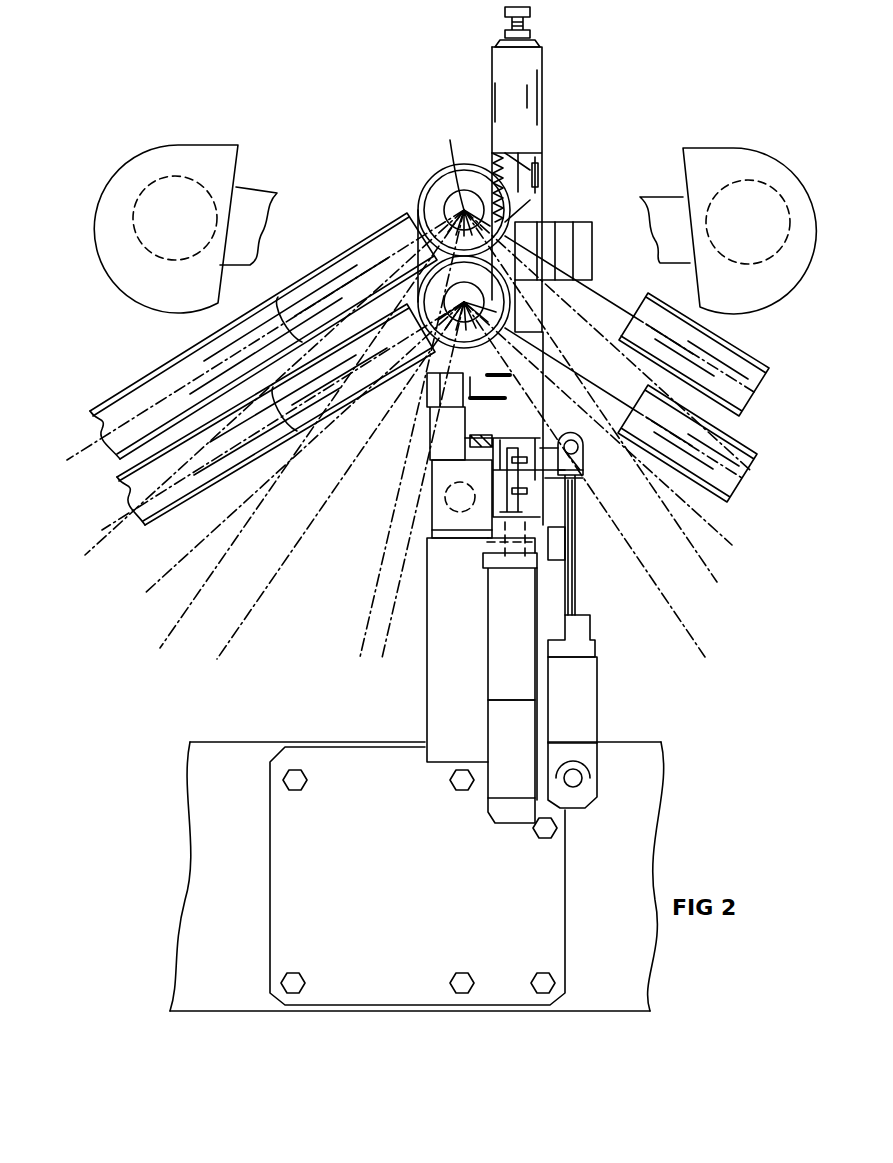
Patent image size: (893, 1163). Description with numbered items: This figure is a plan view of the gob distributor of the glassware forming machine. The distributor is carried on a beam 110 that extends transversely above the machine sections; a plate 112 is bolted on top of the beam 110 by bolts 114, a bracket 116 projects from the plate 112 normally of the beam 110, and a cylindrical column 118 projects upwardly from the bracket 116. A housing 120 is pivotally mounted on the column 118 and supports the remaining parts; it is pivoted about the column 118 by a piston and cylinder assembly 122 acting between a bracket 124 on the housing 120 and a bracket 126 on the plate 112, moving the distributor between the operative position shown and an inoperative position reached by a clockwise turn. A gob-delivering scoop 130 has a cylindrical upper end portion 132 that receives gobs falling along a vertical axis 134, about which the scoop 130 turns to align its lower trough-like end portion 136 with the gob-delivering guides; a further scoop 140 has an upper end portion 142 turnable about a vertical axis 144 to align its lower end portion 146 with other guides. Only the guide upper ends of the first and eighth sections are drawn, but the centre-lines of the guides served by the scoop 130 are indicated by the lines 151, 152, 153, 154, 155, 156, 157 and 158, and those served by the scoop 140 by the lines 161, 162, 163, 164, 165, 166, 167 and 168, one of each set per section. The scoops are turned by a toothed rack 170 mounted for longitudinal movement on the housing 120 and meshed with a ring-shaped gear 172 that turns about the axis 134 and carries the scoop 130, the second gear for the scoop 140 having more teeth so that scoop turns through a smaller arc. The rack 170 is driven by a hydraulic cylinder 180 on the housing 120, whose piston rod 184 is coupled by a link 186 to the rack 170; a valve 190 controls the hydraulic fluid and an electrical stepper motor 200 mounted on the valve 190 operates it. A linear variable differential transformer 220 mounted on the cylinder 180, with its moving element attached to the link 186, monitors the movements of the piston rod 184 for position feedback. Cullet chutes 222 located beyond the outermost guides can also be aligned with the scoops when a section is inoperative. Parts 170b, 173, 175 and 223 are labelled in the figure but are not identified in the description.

The beam 110 is at (240, 876).
The plate 112 is at (420, 900).
The bolts 114 is at (305, 782).
The bracket 116 is at (472, 672).
The cylindrical column 118 is at (432, 495).
The housing 120 is at (440, 405).
The piston and cylinder assembly 122 is at (597, 700).
The bracket 124 is at (583, 462).
The bracket 126 is at (590, 786).
The gob-delivering scoop 130 is at (376, 213).
The cylindrical upper end portion 132 is at (445, 185).
The vertical axis 134 is at (445, 195).
The lower trough-like end portion 136 is at (290, 305).
The further scoop 140 is at (340, 475).
The upper end portion 142 is at (372, 250).
The vertical axis 144 is at (590, 295).
The lower end portion 146 is at (365, 425).
The centre-line of gob-delivering guide 151 is at (90, 440).
The centre-line of gob-delivering guide 152 is at (100, 550).
The centre-line of gob-delivering guide 153 is at (190, 602).
The centre-line of gob-delivering guide 154 is at (368, 580).
The centre-line of gob-delivering guide 155 is at (567, 656).
The centre-line of gob-delivering guide 156 is at (725, 582).
The centre-line of gob-delivering guide 157 is at (760, 475).
The centre-line of gob-delivering guide 158 is at (750, 375).
The centre-line of gob-delivering guide 161 is at (115, 515).
The centre-line of gob-delivering guide 162 is at (190, 542).
The centre-line of gob-delivering guide 163 is at (270, 578).
The centre-line of gob-delivering guide 164 is at (410, 578).
The centre-line of gob-delivering guide 165 is at (540, 652).
The centre-line of gob-delivering guide 166 is at (696, 650).
The centre-line of gob-delivering guide 167 is at (740, 544).
The centre-line of gob-delivering guide 168 is at (762, 482).
The toothed rack 170 is at (525, 452).
The shaft lower portion 170b is at (520, 196).
The ring-shaped gear 172 is at (458, 138).
The locking clip 173 is at (540, 172).
The adjustment bolt 175 is at (530, 22).
The cylinder 180 is at (503, 690).
The piston rod 184 is at (483, 540).
The link 186 is at (505, 492).
The valve 190 is at (512, 748).
The electrical stepper-motor 200 is at (500, 812).
The linear variable differential transformer 220 is at (572, 580).
The cullet chutes 222 is at (208, 150).
The right stop 223 is at (710, 148).